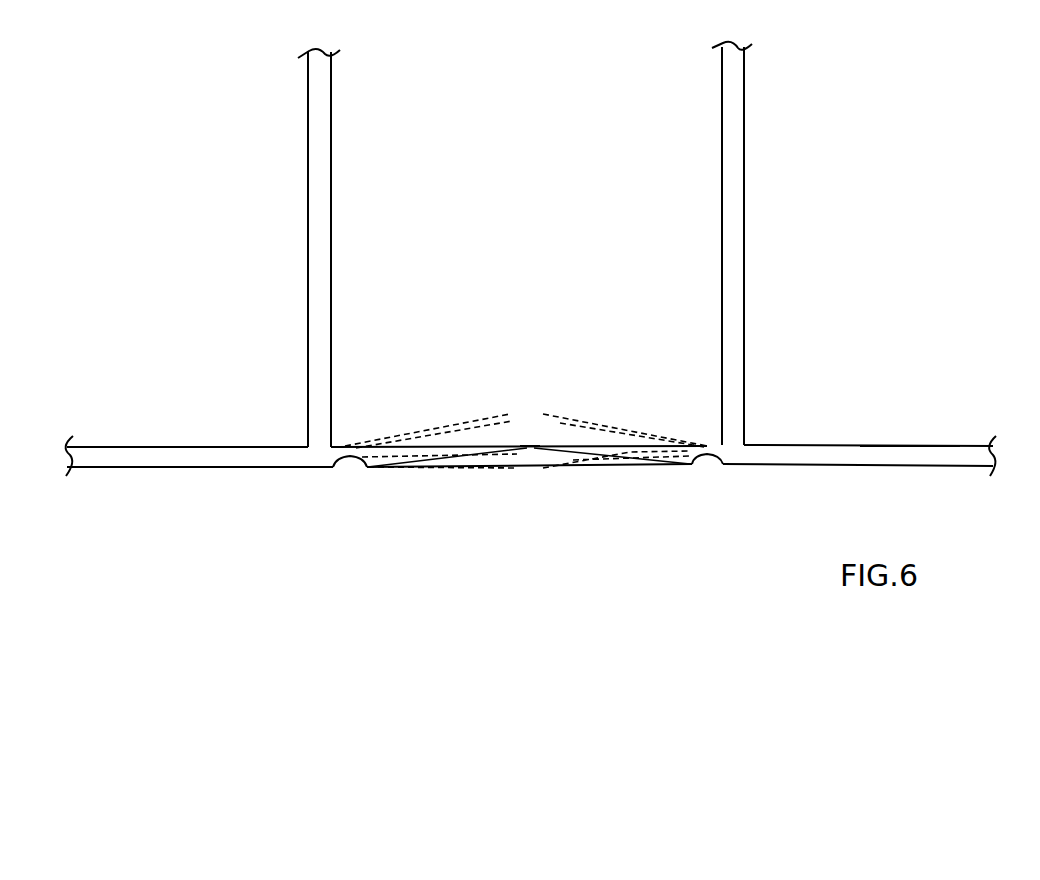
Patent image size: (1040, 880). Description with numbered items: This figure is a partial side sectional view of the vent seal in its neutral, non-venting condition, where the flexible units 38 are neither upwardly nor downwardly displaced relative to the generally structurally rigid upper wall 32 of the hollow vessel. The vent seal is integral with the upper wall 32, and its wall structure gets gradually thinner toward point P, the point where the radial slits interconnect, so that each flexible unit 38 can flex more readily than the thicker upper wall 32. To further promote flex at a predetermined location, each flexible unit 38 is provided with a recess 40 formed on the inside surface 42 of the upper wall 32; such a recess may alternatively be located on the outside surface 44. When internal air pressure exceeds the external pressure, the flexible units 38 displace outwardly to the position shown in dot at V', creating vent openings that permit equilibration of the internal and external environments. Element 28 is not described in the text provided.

The upright post 28 is at (736, 273).
The upper wall 32 is at (160, 456).
The flexible unit 38 is at (597, 453).
The recess 40 is at (706, 467).
The inside surface 42 is at (780, 467).
The outside surface 44 is at (898, 446).
The point P is at (527, 447).
The outward displaced position V' is at (526, 403).